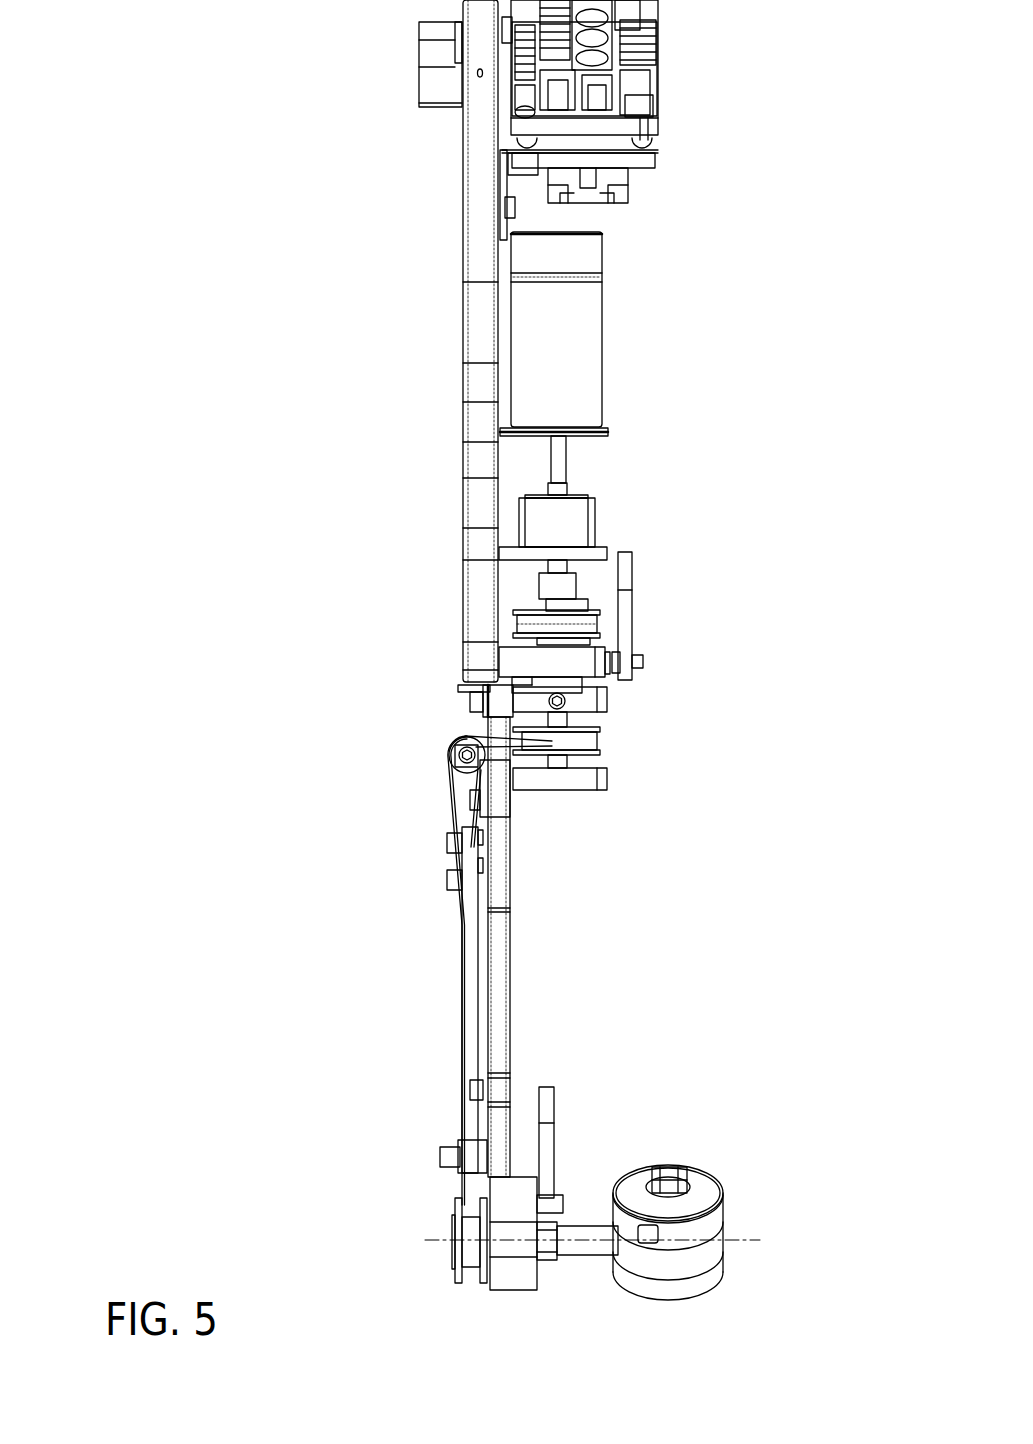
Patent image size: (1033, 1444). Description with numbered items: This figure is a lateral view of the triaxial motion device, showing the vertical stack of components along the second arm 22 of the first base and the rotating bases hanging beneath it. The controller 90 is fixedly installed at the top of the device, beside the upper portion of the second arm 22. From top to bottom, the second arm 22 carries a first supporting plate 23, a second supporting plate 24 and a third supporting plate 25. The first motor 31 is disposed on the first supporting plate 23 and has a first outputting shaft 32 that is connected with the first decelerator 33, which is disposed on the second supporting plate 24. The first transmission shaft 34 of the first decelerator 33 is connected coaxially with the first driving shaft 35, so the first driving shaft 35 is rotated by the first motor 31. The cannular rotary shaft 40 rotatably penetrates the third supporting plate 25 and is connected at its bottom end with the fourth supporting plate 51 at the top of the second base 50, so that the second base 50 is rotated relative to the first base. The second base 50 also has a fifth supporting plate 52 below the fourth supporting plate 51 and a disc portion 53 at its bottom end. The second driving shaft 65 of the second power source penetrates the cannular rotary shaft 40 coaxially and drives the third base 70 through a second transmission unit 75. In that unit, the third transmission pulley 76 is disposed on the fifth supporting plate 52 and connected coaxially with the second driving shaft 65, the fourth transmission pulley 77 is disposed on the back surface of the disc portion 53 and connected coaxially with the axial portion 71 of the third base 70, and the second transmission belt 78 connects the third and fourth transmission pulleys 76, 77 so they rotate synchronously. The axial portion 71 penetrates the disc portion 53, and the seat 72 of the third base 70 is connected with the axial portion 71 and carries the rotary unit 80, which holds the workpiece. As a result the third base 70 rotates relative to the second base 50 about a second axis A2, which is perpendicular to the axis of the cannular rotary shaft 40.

The second arm 22 is at (482, 124).
The first supporting plate 23 is at (510, 438).
The second supporting plate 24 is at (520, 553).
The third supporting plate 25 is at (513, 659).
The first motor 31 is at (585, 310).
The first outputting shaft 32 is at (558, 462).
The first decelerator 33 is at (575, 515).
The first transmission shaft 34 is at (567, 567).
The first driving shaft 35 is at (567, 585).
The cannular rotary shaft 40 is at (573, 684).
The second base 50 is at (540, 943).
The fourth supporting plate 51 is at (598, 703).
The fifth supporting plate 52 is at (597, 778).
The disc portion 53 is at (508, 1273).
The second driving shaft 65 is at (562, 720).
The third base 70 is at (557, 1307).
The axial portion 71 is at (593, 1248).
The seat 72 is at (645, 1267).
The second transmission unit 75 is at (433, 1268).
The third transmission pulley 76 is at (567, 750).
The fourth transmission pulley 77 is at (453, 1278).
The second transmission belt 78 is at (460, 989).
The rotary unit 80 is at (715, 1155).
The controller 90 is at (690, 33).
The second axis A2 is at (430, 1240).